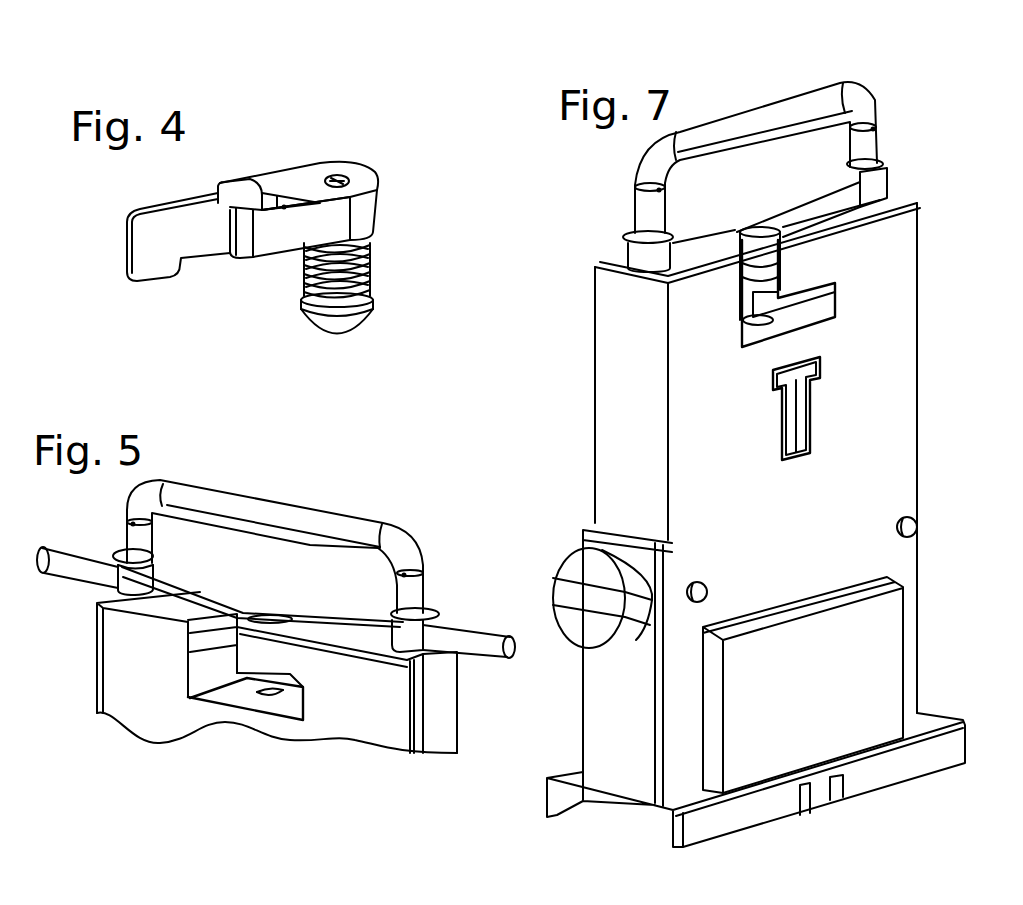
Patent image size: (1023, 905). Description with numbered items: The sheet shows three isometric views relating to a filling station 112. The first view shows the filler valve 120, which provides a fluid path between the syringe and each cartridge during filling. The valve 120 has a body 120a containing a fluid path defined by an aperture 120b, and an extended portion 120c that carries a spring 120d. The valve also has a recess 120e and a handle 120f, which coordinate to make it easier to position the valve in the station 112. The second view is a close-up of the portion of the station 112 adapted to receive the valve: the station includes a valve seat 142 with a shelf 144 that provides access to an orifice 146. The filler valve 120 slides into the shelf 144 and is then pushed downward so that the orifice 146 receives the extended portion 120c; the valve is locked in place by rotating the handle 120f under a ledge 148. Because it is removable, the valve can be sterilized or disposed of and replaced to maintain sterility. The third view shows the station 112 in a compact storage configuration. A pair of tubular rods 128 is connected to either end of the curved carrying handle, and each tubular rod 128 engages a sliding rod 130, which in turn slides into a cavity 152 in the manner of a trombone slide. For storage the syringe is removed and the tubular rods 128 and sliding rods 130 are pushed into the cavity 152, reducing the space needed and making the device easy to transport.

In FIG. 4, the filler valve 120 is at (372, 149).
In FIG. 4, the body 120a is at (262, 253).
In FIG. 4, the aperture 120b is at (349, 179).
In FIG. 4, the extended portion 120c is at (360, 329).
In FIG. 4, the spring 120d is at (373, 252).
In FIG. 4, the recess 120e is at (273, 203).
In FIG. 4, the handle 120f is at (137, 286).
In FIG. 5, the filling station 112 is at (334, 496).
In FIG. 7, the filling station 112 is at (906, 89).
In FIG. 5, the valve seat 142 is at (240, 723).
In FIG. 5, the shelf 144 is at (287, 713).
In FIG. 5, the orifice 146 is at (268, 702).
In FIG. 5, the ledge 148 is at (291, 676).
In FIG. 7, the tubular rods 128 is at (874, 137).
In FIG. 7, the sliding rods 130 is at (881, 194).
In FIG. 7, the cavity 152 is at (891, 213).